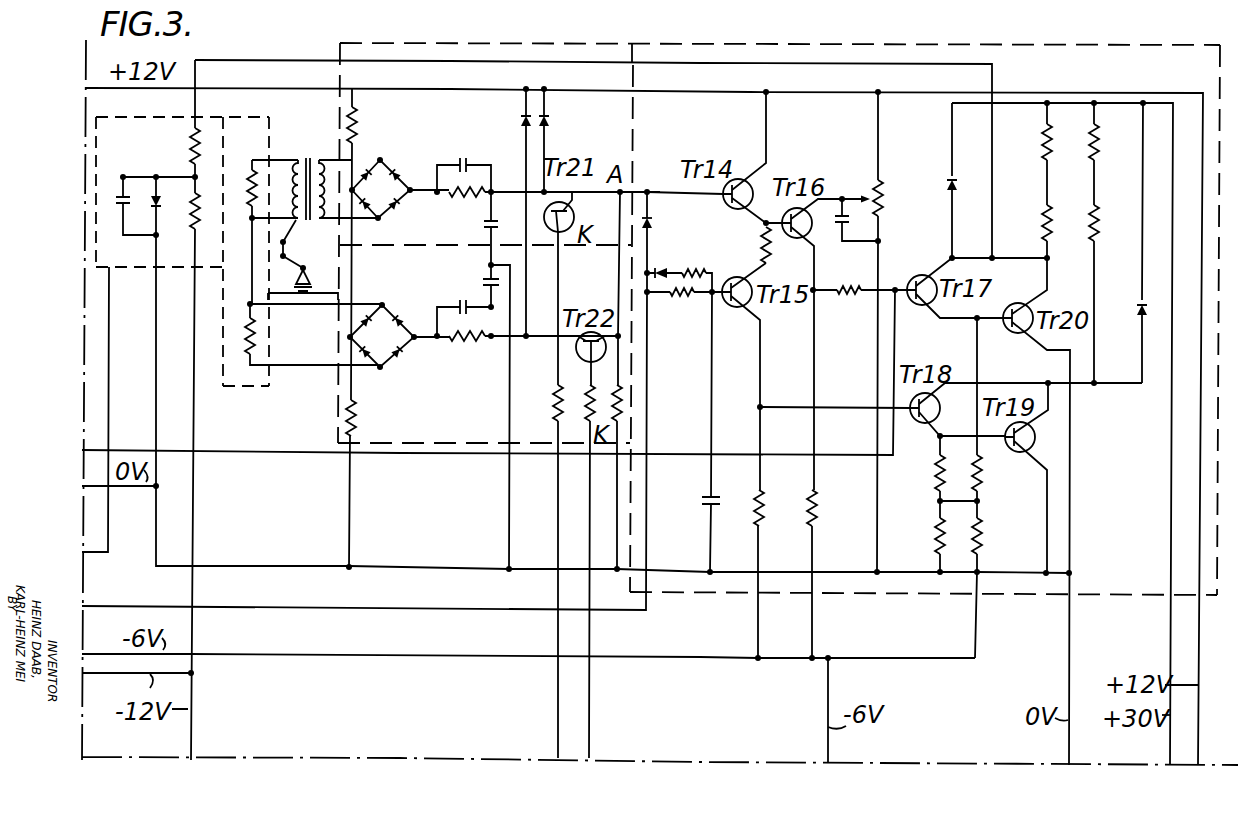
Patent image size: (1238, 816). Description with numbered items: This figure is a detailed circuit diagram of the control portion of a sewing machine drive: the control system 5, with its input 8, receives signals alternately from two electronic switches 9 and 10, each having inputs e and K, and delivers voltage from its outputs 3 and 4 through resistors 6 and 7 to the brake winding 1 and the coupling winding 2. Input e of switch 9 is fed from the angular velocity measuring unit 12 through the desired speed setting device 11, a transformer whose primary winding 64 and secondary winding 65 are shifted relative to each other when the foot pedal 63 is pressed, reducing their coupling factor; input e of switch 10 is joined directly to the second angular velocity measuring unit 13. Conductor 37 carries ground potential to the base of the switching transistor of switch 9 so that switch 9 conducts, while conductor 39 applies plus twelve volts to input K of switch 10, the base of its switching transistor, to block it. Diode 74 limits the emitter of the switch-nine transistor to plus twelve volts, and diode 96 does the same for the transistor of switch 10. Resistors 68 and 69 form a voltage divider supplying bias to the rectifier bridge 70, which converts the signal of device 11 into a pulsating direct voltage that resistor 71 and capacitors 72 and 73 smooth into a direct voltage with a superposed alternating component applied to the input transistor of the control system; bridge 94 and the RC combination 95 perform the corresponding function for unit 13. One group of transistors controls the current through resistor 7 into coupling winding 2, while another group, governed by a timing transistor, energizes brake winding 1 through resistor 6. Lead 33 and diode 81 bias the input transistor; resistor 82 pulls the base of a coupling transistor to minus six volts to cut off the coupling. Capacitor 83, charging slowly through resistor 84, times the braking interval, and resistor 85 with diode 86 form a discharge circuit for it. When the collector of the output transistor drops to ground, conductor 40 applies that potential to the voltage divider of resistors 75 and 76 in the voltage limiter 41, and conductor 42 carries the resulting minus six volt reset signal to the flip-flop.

The brake winding 1 is at (1098, 147).
The coupling winding 2 is at (1040, 152).
The output 3 is at (1094, 386).
The output 4 is at (1050, 259).
The control system 5 is at (1093, 586).
The resistor 6 is at (1095, 237).
The resistor 7 is at (1048, 230).
The input 8 is at (665, 192).
The electronic switch 9 is at (350, 50).
The electronic switch 10 is at (450, 437).
The desired speed setting device 11 is at (302, 155).
The angular velocity measuring unit 12 is at (250, 165).
The angular velocity measuring unit 13 is at (252, 366).
The connecting lead 33 is at (389, 401).
The conductor 37 is at (557, 712).
The conductor 39 is at (590, 708).
The conductor 40 is at (993, 79).
The voltage limiter 41 is at (137, 128).
The conductor 42 is at (110, 530).
The foot pedal 63 is at (287, 247).
The primary winding 64 is at (303, 145).
The secondary winding 65 is at (328, 206).
The resistor 68 is at (360, 128).
The resistor 69 is at (357, 415).
The rectifier bridge 70 is at (425, 168).
The resistor 71 is at (452, 195).
The capacitor 72 is at (472, 162).
The capacitor 73 is at (490, 228).
The diode 74 is at (551, 122).
The resistor 75 is at (190, 148).
The resistor 76 is at (190, 227).
The diode 81 is at (652, 231).
The resistor 82 is at (812, 502).
The capacitor 83 is at (704, 500).
The resistor 84 is at (684, 296).
The resistor 85 is at (645, 274).
The diode 86 is at (661, 270).
The rectifier bridge 94 is at (408, 352).
The RC combination 95 is at (481, 301).
The diode 96 is at (523, 122).